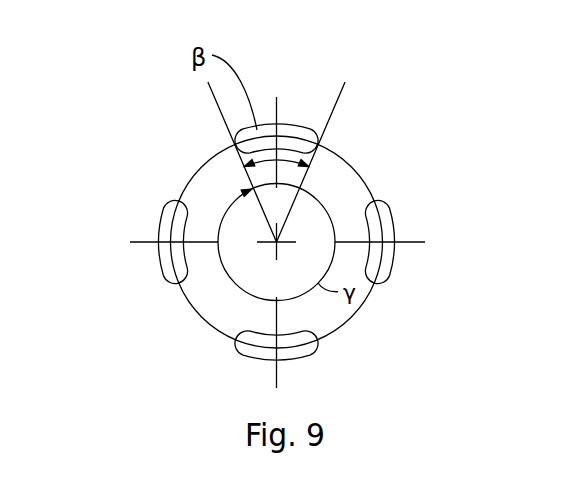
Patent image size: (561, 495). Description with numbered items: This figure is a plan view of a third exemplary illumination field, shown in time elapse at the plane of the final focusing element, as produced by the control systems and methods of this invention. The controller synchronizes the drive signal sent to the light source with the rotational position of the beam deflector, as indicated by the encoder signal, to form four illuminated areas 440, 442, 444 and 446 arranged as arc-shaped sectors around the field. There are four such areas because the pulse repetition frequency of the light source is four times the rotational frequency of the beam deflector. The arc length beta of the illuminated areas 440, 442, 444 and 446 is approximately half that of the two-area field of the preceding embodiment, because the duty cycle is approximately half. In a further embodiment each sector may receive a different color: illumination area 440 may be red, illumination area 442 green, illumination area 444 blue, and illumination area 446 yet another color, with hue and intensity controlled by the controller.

The illuminated area 440 is at (305, 127).
The illuminated area 442 is at (388, 203).
The illuminated area 444 is at (307, 352).
The illuminated area 446 is at (168, 282).